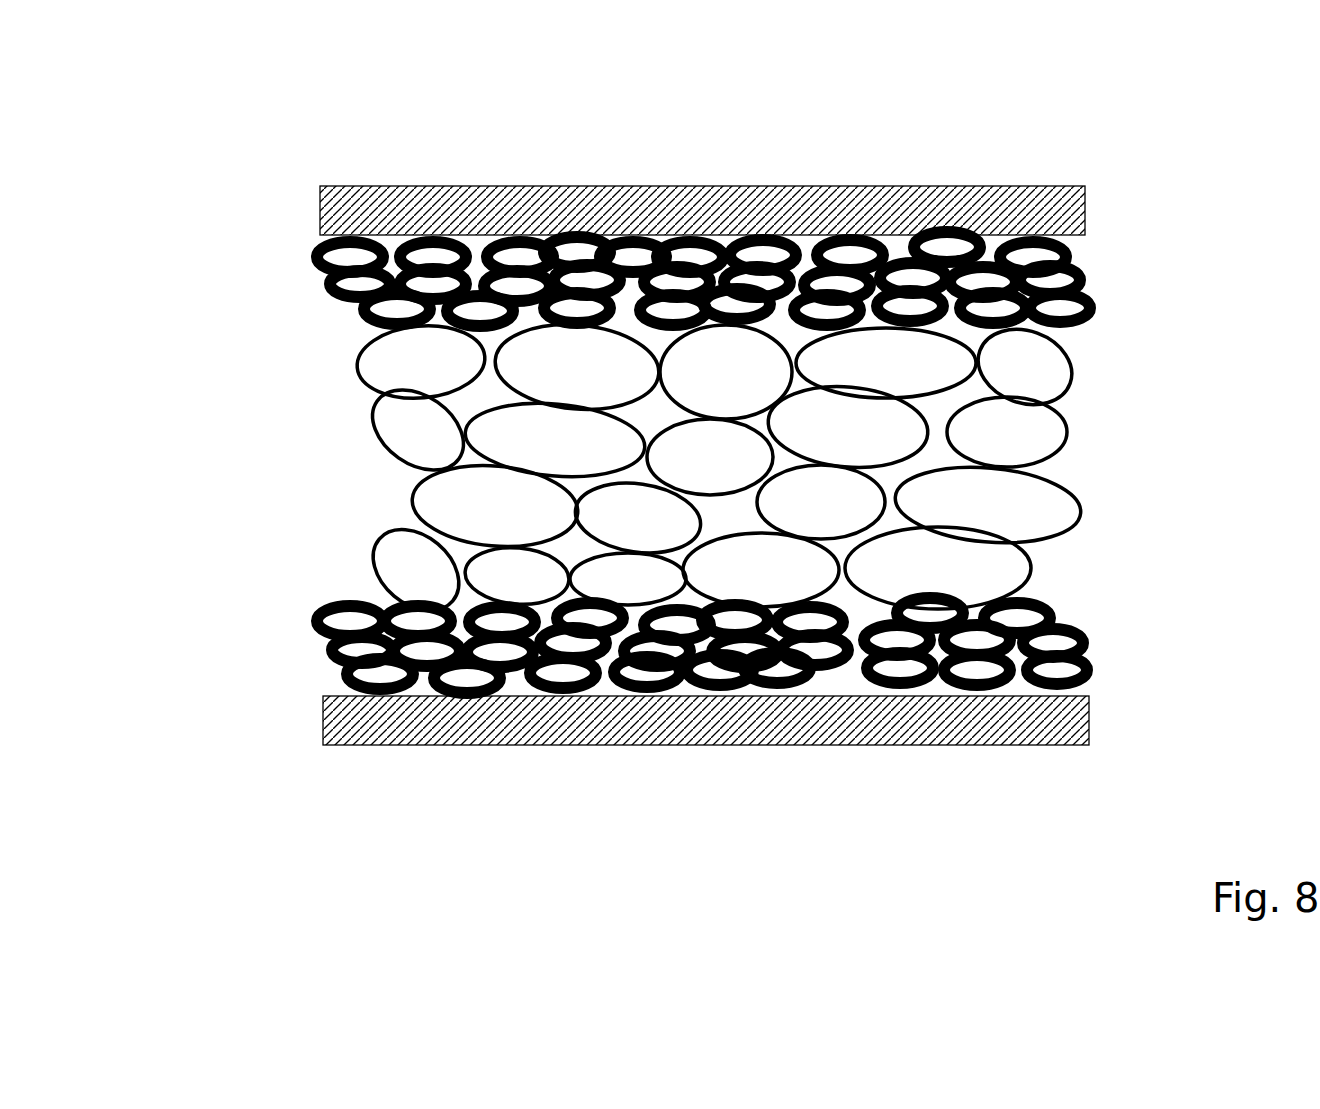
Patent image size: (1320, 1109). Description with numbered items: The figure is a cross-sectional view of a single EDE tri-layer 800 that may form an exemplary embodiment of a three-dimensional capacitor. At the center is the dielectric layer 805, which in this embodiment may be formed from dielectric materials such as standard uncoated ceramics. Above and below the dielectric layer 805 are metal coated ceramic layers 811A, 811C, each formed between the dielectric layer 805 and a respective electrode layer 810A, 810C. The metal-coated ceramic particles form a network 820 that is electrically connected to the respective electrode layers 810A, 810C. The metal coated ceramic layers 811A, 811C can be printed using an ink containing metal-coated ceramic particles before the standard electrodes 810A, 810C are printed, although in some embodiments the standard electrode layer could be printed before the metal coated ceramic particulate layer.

The EDE tri-layer 800 is at (1311, 80).
The dielectric layer 805 is at (287, 300).
The electrode layer 810A is at (1085, 211).
The electrode layer 810C is at (1089, 718).
The metal coated ceramic layer 811A is at (1115, 243).
The metal coated ceramic layer 811C is at (1110, 605).
The network 820 is at (296, 243).